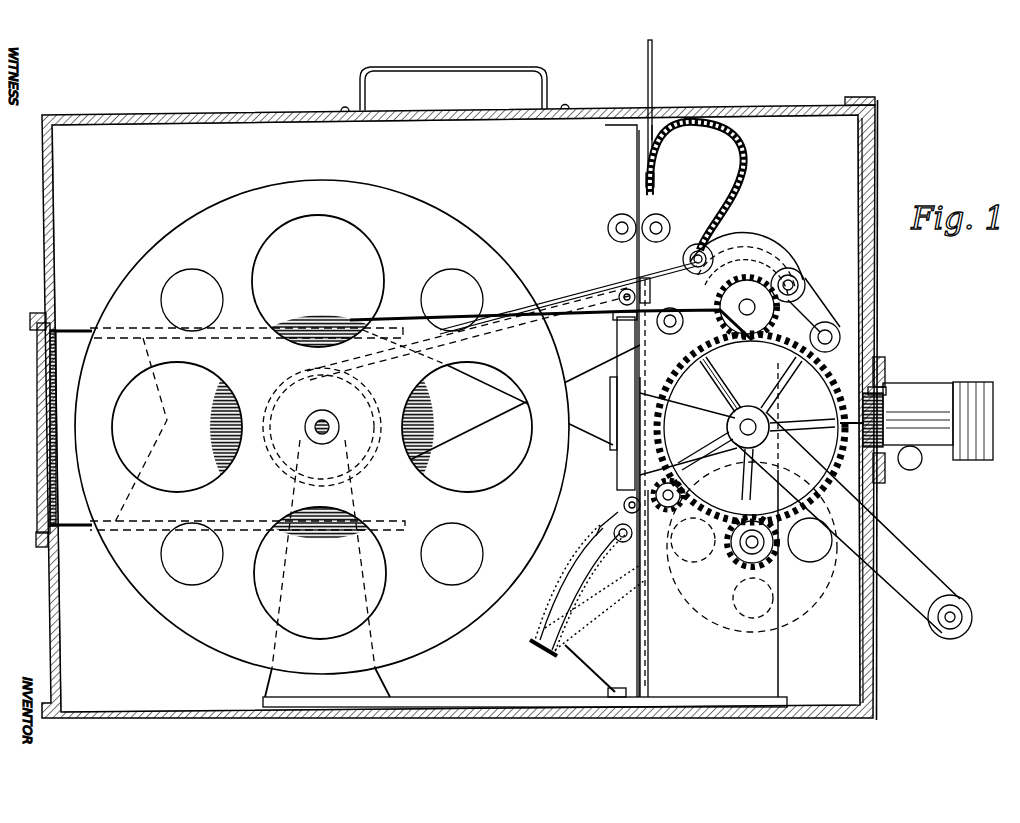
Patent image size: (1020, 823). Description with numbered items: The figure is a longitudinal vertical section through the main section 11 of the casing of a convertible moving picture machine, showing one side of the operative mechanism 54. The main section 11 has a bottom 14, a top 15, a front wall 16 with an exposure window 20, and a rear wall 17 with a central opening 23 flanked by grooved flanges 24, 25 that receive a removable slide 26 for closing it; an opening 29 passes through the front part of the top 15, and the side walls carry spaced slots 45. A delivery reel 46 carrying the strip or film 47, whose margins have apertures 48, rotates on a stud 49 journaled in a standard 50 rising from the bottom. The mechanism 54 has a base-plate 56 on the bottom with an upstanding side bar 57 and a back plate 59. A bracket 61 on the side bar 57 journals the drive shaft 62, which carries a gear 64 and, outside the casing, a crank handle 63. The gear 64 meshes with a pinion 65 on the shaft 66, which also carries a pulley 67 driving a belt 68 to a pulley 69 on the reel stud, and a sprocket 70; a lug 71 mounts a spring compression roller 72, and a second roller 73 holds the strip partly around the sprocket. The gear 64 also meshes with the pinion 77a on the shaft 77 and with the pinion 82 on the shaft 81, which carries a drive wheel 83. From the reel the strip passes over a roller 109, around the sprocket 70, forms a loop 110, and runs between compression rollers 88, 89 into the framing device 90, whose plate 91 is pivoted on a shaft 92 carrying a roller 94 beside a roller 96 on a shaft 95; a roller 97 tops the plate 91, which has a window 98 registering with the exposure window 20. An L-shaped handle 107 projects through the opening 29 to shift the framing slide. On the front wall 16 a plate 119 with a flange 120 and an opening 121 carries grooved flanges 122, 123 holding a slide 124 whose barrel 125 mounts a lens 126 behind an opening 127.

The main section 11 is at (186, 113).
The bottom 14 is at (376, 722).
The top 15 is at (240, 113).
The front wall 16 is at (858, 132).
The rear wall 17 is at (47, 152).
The exposure window 20 is at (858, 398).
The opening 23 is at (56, 420).
The grooved flange 24 is at (40, 547).
The grooved flange 25 is at (36, 312).
The slide 26 is at (46, 416).
The opening 29 is at (657, 122).
The slot 45 is at (145, 368).
The delivery reel 46 is at (157, 250).
The strip or film 47 is at (355, 318).
The apertures 48 is at (562, 580).
The stud 49 is at (322, 444).
The standard 50 is at (280, 681).
The mechanism 54 is at (722, 384).
The base-plate 56 is at (745, 700).
The side bar 57 is at (765, 672).
The back plate 59 is at (636, 142).
The bracket 61 is at (660, 455).
The drive shaft 62 is at (740, 428).
The crank handle 63 is at (921, 590).
The gear 64 is at (838, 402).
The pinion 65 is at (787, 265).
The shaft 66 is at (747, 307).
The pulley 67 is at (750, 245).
The belt 68 is at (558, 298).
The pulley 69 is at (385, 357).
The sprocket 70 is at (762, 262).
The lug 71 is at (830, 345).
The compression roller 72 is at (800, 282).
The compression roller 73 is at (705, 250).
The shaft 77 is at (664, 508).
The pinion 77a is at (680, 505).
The shaft 81 is at (745, 547).
The pinion 82 is at (776, 546).
The drive wheel 83 is at (800, 600).
The compression roller 88 is at (665, 220).
The compression roller 89 is at (616, 220).
The framing device 90 is at (614, 317).
The plate 91 is at (624, 335).
The shaft 92 is at (624, 504).
The roller 94 is at (616, 513).
The shaft 95 is at (600, 572).
The roller 96 is at (621, 542).
The roller 97 is at (623, 290).
The window 98 is at (612, 385).
The handle 107 is at (648, 63).
The roller 109 is at (670, 334).
The loop 110 is at (748, 168).
The plate 119 is at (879, 172).
The flange 120 is at (849, 97).
The opening 121 is at (866, 428).
The grooved flange 122 is at (884, 462).
The grooved flange 123 is at (880, 364).
The slide 124 is at (887, 380).
The barrel 125 is at (910, 396).
The lens 126 is at (986, 456).
The opening 127 is at (885, 405).